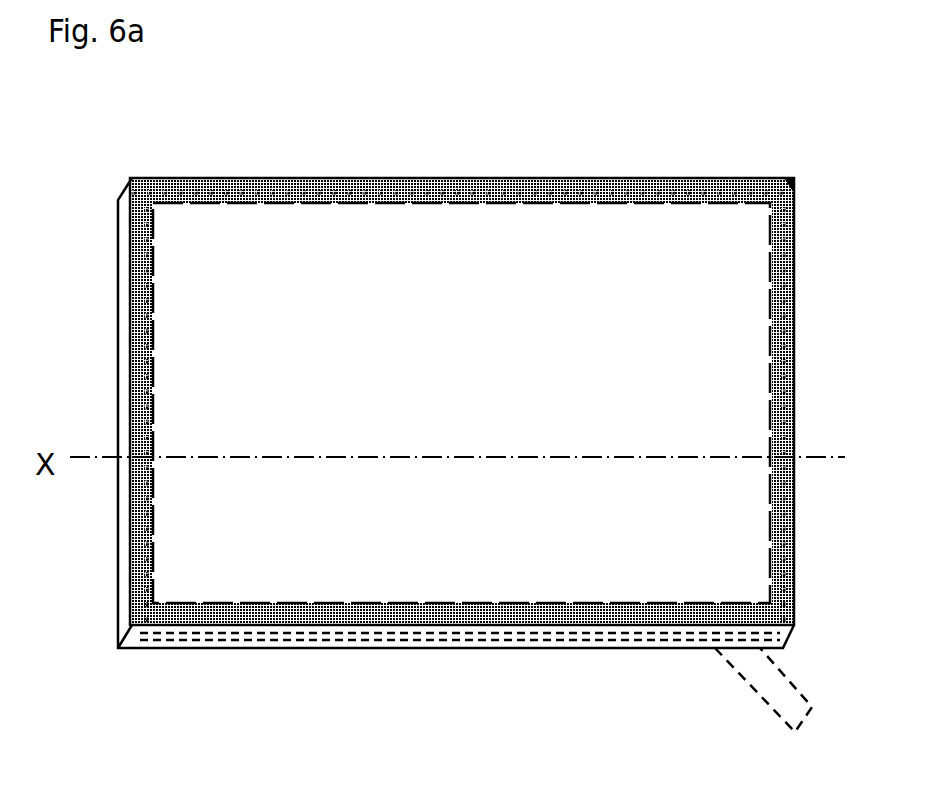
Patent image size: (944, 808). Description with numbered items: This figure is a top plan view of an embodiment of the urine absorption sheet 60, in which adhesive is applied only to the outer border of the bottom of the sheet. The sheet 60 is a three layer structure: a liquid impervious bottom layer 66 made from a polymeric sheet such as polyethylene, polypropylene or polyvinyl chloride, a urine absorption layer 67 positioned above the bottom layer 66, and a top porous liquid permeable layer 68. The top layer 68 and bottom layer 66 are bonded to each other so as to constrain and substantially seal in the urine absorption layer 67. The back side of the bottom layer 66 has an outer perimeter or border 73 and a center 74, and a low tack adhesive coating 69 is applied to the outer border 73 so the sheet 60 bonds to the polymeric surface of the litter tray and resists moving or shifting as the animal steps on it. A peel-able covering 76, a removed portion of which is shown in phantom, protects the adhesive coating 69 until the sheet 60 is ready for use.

The urine absorption sheet 60 is at (422, 127).
The liquid impervious bottom layer 66 is at (118, 218).
The urine absorption layer 67 is at (228, 637).
The top porous liquid permeable layer 68 is at (185, 370).
The adhesive coating 69 is at (508, 612).
The outer perimeter or border 73 is at (393, 613).
The center 74 is at (713, 288).
The peel-able covering 76 is at (775, 707).